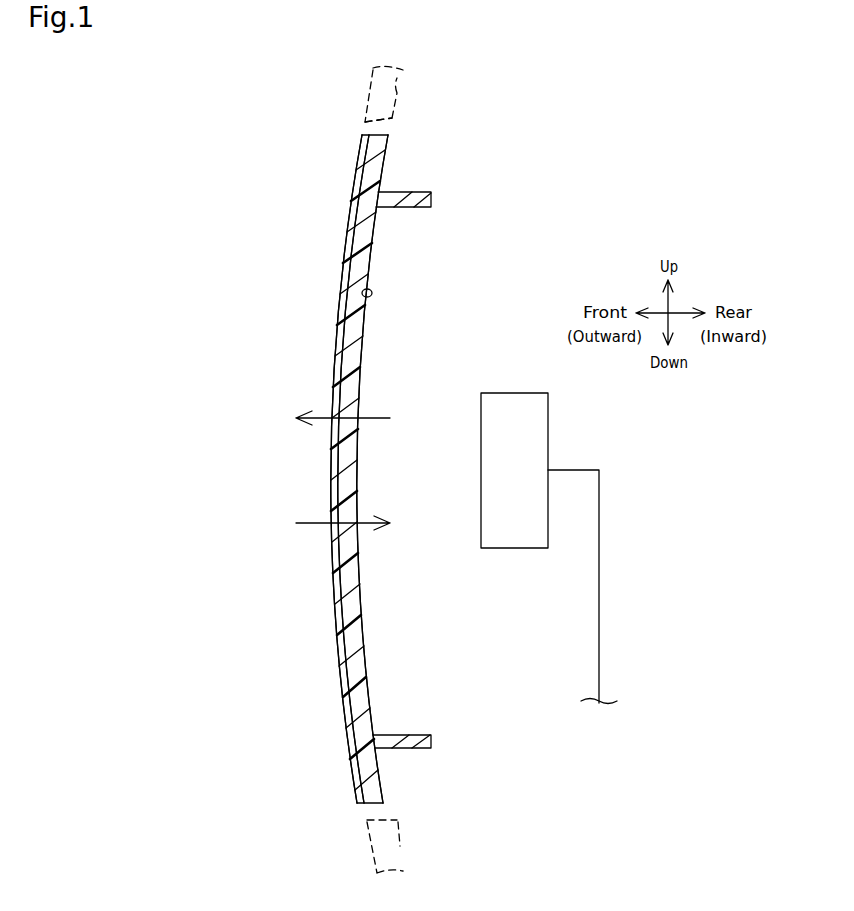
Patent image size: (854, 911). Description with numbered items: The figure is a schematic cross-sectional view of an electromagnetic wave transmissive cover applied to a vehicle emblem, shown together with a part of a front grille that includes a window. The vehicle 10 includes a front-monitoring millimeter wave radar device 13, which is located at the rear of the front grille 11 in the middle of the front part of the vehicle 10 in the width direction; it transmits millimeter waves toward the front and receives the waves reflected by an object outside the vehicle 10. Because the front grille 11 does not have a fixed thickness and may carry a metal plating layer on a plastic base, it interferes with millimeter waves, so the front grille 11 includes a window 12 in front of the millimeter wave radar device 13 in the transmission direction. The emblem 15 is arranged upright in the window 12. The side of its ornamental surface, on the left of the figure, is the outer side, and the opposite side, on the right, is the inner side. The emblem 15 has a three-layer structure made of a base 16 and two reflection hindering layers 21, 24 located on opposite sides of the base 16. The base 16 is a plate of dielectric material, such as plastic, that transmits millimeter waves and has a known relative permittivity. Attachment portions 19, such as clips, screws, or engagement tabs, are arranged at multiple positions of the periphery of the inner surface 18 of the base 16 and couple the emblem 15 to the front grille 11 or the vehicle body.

The vehicle 10 is at (598, 136).
The front grille 11 is at (372, 78).
The window 12 is at (372, 121).
The millimeter wave radar device 13 is at (512, 550).
The emblem 15 is at (302, 164).
The base 16 is at (356, 248).
The inner surface 18 is at (362, 296).
The attachment portions 19 is at (410, 197).
The reflection hindering layer 21 is at (333, 462).
The reflection hindering layer 24 is at (360, 462).